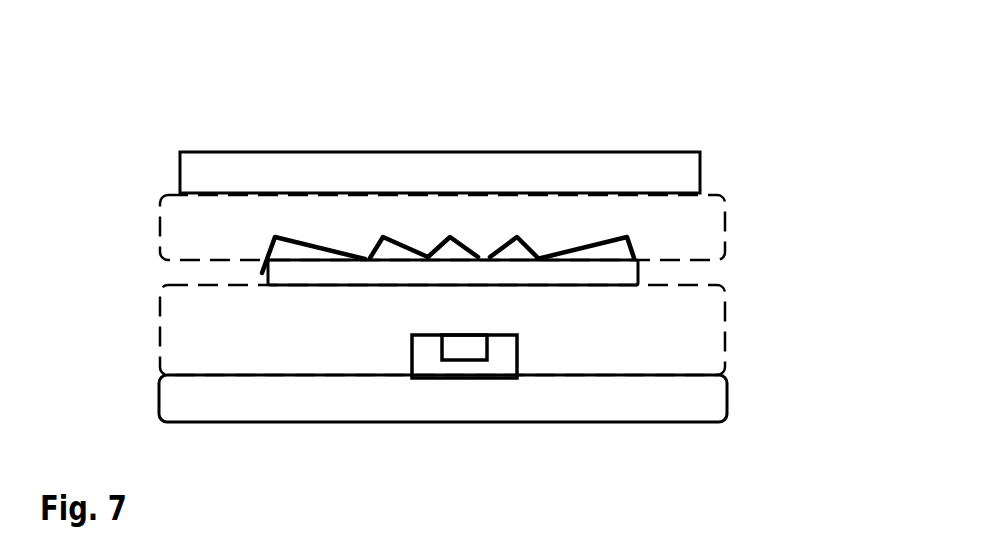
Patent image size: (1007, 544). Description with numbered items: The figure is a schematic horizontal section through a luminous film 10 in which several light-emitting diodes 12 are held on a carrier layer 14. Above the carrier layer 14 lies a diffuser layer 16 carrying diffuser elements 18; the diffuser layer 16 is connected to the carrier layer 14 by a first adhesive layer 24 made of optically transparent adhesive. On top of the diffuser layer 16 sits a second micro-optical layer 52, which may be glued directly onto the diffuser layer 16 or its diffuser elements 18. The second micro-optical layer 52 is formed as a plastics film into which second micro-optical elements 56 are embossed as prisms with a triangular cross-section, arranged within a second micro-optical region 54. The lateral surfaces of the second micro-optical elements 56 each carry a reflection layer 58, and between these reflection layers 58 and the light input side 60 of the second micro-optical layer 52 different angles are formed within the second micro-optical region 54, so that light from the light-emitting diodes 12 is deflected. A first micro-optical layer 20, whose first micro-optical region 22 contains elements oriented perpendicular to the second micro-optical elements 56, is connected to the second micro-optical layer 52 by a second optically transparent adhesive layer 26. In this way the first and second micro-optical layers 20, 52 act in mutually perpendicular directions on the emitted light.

The luminous film 10 is at (712, 100).
The light-emitting diode 12 is at (465, 360).
The carrier layer 14 is at (412, 397).
The diffuser layer 16 is at (707, 275).
The diffuser element 18 is at (347, 268).
The first micro-optical layer 20 is at (738, 170).
The first micro-optical region 22 is at (200, 172).
The first adhesive layer 24 is at (180, 337).
The second optically transparent adhesive layer 26 is at (180, 226).
The second micro-optical layer 52 is at (702, 247).
The second micro-optical region 54 is at (235, 247).
The second micro-optical element 56 is at (293, 248).
The reflection layer 58 is at (262, 247).
The light input side 60 is at (574, 277).